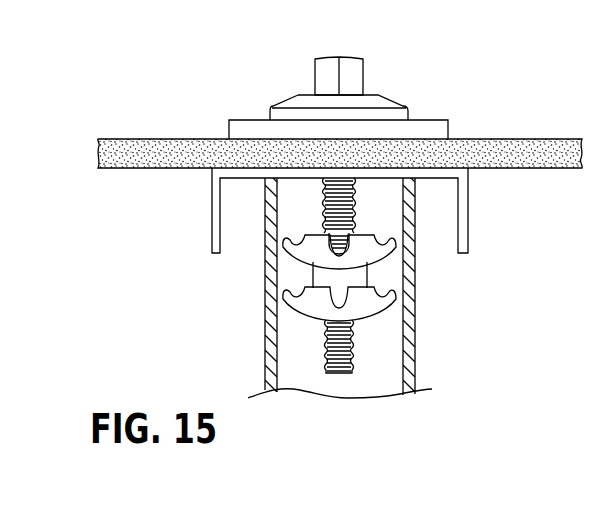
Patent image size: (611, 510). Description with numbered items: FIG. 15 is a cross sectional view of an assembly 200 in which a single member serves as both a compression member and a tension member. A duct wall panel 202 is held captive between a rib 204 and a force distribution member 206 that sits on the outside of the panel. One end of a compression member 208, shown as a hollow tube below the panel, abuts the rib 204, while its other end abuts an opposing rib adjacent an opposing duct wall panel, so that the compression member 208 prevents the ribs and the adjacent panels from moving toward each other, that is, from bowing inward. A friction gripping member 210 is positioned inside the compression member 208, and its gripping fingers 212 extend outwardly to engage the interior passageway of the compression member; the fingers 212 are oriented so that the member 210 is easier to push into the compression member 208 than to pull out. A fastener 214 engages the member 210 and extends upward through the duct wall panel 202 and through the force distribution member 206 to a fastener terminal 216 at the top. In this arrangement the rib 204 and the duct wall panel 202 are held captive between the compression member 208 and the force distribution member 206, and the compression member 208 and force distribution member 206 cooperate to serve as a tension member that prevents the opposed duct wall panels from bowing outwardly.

The assembly 200 is at (450, 48).
The duct wall panel 202 is at (534, 170).
The rib 204 is at (212, 222).
The force distribution member 206 is at (246, 120).
The compression member 208 is at (415, 342).
The friction gripping member 210 is at (376, 311).
The gripping fingers 212 is at (397, 287).
The fastener 214 is at (357, 190).
The fastener terminal 216 is at (314, 77).